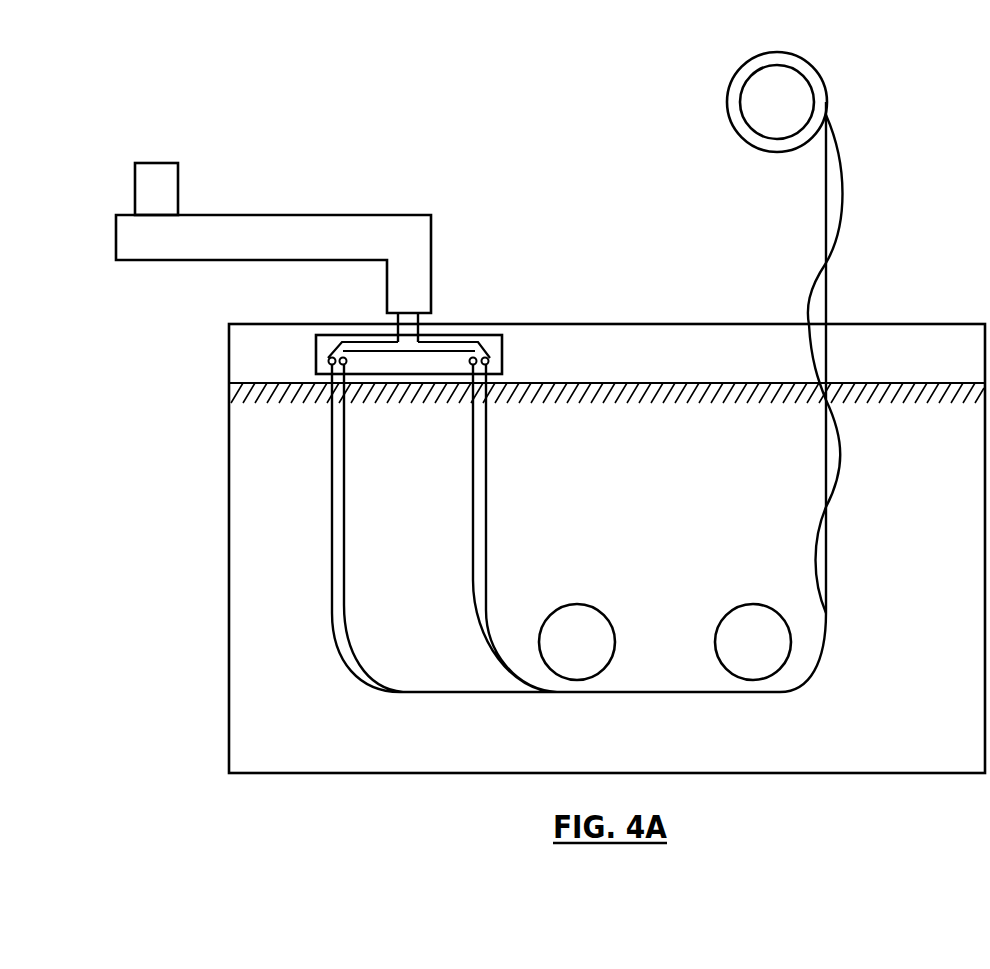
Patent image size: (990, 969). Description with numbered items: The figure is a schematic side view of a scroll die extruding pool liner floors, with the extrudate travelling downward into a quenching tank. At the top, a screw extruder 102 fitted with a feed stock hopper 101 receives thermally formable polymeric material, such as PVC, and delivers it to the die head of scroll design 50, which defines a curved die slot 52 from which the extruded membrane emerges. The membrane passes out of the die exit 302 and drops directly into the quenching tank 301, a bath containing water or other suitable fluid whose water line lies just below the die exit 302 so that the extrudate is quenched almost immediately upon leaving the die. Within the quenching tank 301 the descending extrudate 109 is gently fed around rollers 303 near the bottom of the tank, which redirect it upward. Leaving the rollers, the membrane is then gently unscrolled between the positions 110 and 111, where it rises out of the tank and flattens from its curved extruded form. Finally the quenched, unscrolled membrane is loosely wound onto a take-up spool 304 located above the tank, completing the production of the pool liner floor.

The feed stock hopper 101 is at (158, 162).
The screw extruder 102 is at (255, 215).
The scroll design die head 50 is at (502, 337).
The curved die slot 52 is at (312, 378).
The wire 109 is at (488, 438).
The position 110 is at (840, 452).
The position 111 is at (842, 230).
The quenching tank 301 is at (228, 613).
The die exit 302 is at (280, 410).
The rollers 303 is at (717, 667).
The take-up spool 304 is at (815, 72).